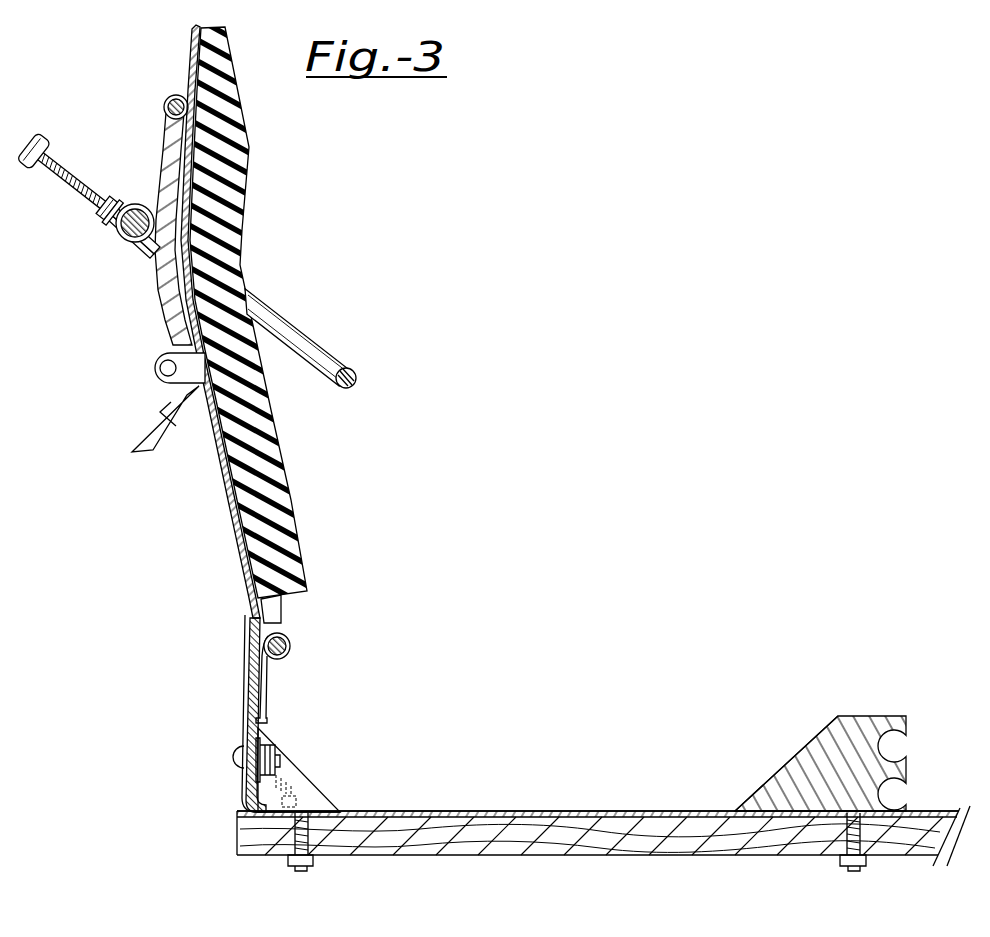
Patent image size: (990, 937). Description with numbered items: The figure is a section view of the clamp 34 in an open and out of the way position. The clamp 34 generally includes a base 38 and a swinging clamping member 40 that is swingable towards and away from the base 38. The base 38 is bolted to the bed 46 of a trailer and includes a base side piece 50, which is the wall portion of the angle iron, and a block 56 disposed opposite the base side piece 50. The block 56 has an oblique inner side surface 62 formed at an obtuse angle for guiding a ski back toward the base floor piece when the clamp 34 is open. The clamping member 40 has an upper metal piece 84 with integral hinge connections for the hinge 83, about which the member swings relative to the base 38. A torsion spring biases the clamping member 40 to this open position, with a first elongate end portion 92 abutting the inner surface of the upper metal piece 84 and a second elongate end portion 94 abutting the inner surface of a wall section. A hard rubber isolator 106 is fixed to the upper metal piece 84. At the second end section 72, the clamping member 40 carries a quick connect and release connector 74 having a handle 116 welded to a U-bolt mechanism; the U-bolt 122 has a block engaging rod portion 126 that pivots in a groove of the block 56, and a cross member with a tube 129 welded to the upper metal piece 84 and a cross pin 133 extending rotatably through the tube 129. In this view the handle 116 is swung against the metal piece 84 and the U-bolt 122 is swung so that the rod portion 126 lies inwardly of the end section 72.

The clamp 34 is at (460, 268).
The base 38 is at (490, 811).
The clamping member 40 is at (223, 490).
The bed 46 is at (527, 855).
The base side piece 50 is at (247, 676).
The block 56 is at (852, 716).
The inner side surface 62 is at (778, 768).
The second end section 72 is at (197, 31).
The quick connect and release connector 74 is at (58, 178).
The hinge 83 is at (291, 646).
The upper metal piece 84 is at (212, 450).
The first elongate end portion 92 is at (280, 612).
The second elongate end portion 94 is at (268, 710).
The rubber isolator 106 is at (290, 498).
The handle 116 is at (143, 430).
The U-bolt 122 is at (285, 314).
The block engaging rod portion 126 is at (359, 369).
The tube 129 is at (118, 242).
The cross pin 133 is at (133, 204).